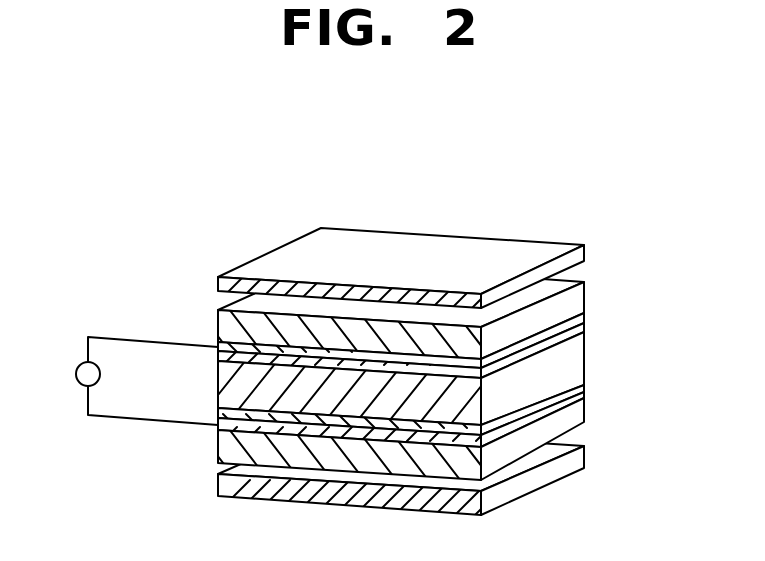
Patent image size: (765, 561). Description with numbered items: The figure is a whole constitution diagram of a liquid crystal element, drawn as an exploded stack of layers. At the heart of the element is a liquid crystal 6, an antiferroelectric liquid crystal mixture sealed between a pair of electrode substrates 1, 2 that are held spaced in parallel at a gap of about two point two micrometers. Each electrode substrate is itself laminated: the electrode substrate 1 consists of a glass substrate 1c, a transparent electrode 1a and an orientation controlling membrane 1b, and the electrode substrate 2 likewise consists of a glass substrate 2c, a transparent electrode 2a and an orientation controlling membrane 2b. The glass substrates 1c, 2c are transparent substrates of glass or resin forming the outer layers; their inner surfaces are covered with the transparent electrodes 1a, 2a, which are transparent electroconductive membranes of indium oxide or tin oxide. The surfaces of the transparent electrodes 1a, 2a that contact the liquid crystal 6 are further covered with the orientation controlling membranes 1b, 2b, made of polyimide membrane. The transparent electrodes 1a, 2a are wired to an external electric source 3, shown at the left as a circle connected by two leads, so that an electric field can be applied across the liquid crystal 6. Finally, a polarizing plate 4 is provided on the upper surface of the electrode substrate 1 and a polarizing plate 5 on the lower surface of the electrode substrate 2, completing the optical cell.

The electrode substrate 1 is at (448, 320).
The transparent electrode 1a is at (583, 318).
The orientation controlling membrane 1b is at (583, 333).
The glass substrate 1c is at (583, 295).
The electrode substrate 2 is at (455, 434).
The transparent electrode 2a is at (583, 395).
The orientation controlling membrane 2b is at (583, 388).
The glass substrate 2c is at (663, 382).
The external electric source 3 is at (74, 377).
The polarizing plate 4 is at (585, 249).
The polarizing plate 5 is at (522, 486).
The liquid crystal 6 is at (218, 388).